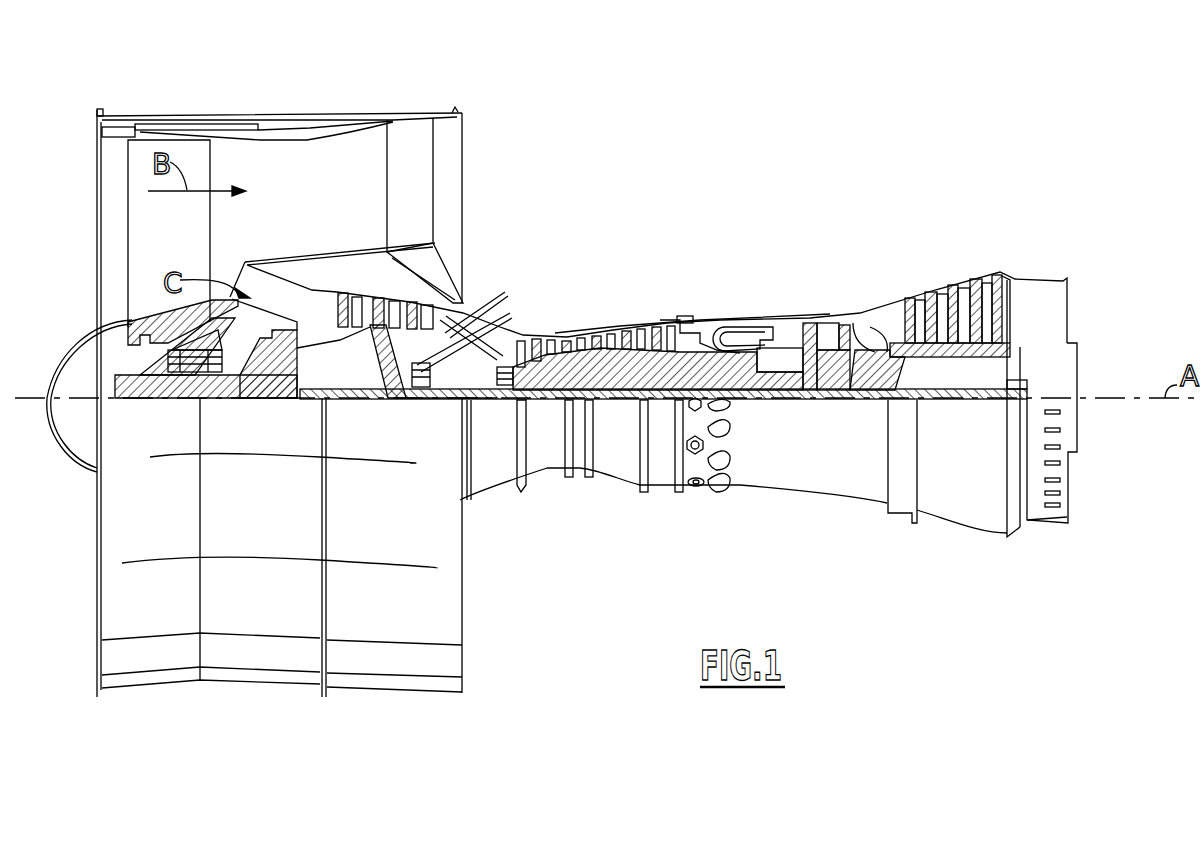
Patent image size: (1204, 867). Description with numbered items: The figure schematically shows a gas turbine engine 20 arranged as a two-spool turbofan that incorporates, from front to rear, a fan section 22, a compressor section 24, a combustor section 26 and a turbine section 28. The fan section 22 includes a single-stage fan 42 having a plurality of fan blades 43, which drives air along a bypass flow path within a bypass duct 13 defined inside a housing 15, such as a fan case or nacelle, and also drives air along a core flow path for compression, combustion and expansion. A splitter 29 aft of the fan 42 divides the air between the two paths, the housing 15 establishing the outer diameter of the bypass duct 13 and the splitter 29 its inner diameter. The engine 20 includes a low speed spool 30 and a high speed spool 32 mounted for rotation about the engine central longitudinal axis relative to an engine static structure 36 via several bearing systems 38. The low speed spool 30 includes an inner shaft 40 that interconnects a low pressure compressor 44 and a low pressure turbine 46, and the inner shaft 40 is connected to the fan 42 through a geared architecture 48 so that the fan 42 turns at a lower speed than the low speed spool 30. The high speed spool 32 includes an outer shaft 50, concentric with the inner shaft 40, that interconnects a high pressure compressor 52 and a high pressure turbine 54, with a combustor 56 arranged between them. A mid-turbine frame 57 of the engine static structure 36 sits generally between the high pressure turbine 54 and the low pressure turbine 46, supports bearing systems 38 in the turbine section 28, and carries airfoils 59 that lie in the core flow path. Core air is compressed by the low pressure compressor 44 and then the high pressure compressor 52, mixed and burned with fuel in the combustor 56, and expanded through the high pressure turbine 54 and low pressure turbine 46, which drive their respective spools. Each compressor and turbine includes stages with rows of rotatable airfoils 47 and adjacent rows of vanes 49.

The bypass duct 13 is at (342, 130).
The housing 15 is at (280, 120).
The gas turbine engine 20 is at (741, 170).
The fan section 22 is at (206, 98).
The compressor section 24 is at (518, 296).
The combustor section 26 is at (737, 284).
The turbine section 28 is at (914, 250).
The splitter 29 is at (256, 263).
The low speed spool 30 is at (620, 414).
The high speed spool 32 is at (657, 373).
The engine static structure 36 is at (660, 500).
The bearing systems 38 is at (420, 380).
The inner shaft 40 is at (480, 403).
The fan 42 is at (185, 246).
The fan blades 43 is at (200, 246).
The low pressure compressor 44 is at (395, 295).
The low pressure turbine 46 is at (953, 293).
The rotatable airfoils 47 is at (345, 307).
The geared architecture 48 is at (288, 380).
The vanes 49 is at (368, 297).
The outer shaft 50 is at (748, 378).
The high pressure compressor 52 is at (600, 330).
The high pressure turbine 54 is at (808, 320).
The combustor 56 is at (737, 337).
The mid-turbine frame 57 is at (877, 303).
The airfoils 59 is at (898, 362).